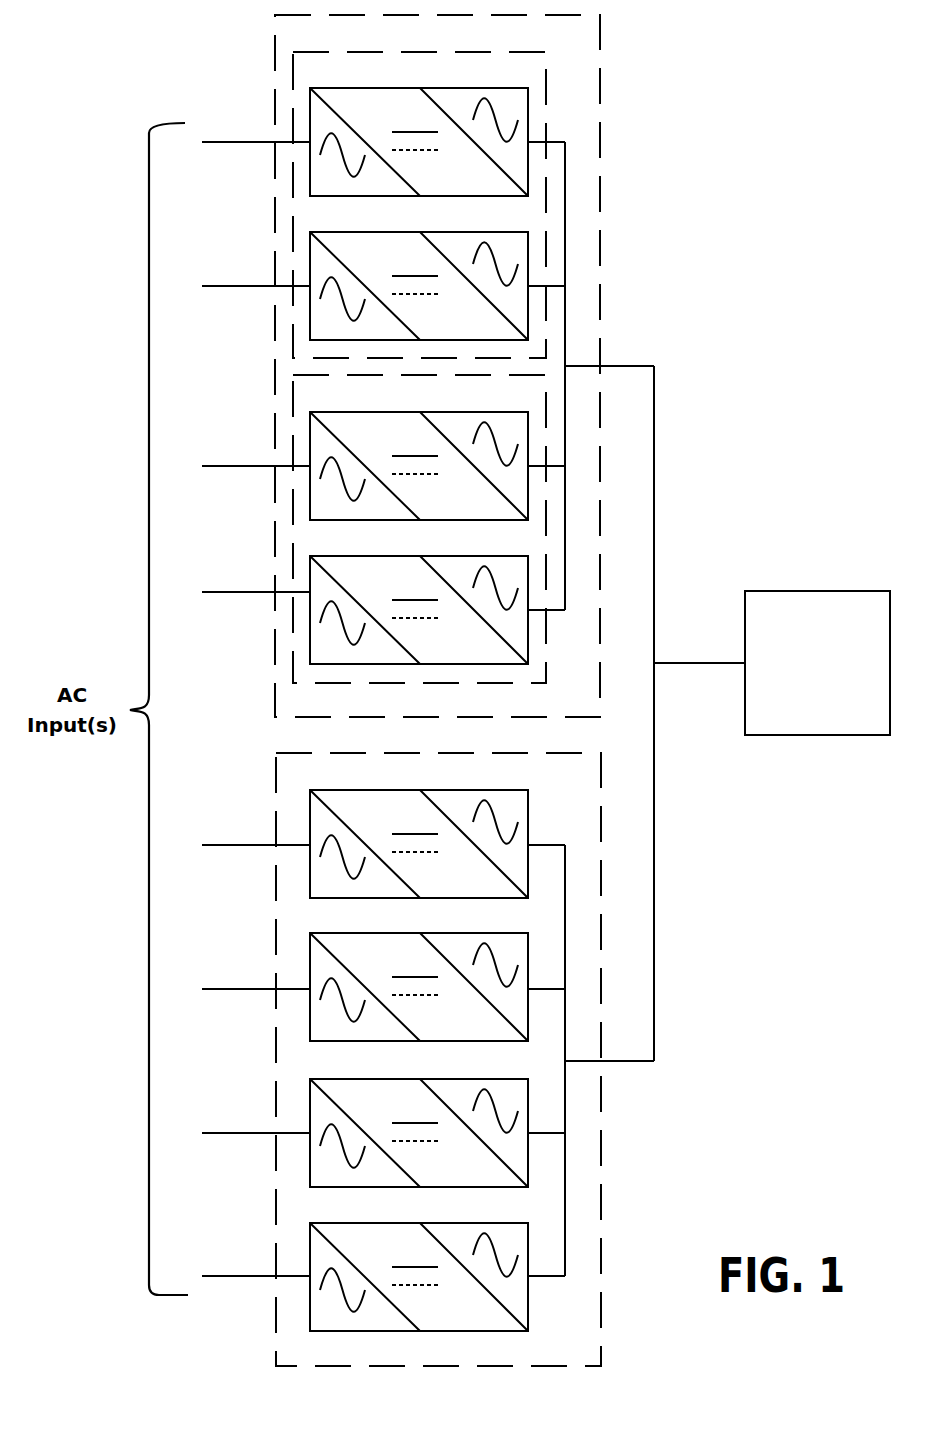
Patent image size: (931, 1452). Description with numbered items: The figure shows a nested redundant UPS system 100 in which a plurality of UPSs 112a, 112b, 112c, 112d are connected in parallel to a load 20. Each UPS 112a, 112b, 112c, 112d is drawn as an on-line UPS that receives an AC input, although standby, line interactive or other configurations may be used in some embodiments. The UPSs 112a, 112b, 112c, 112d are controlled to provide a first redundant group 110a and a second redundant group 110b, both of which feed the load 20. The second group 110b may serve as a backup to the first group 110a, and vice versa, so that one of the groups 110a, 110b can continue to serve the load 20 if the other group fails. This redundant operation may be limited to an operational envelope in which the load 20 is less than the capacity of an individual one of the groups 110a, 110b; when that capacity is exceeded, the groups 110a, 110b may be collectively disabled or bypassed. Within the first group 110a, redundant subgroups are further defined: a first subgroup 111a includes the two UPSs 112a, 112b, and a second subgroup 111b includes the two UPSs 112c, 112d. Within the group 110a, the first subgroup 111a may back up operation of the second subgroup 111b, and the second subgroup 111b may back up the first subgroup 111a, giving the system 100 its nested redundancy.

The UPS system 100 is at (504, 690).
The load 20 is at (820, 590).
The first redundant group 110a is at (418, 366).
The second redundant group 110b is at (275, 1060).
The first redundant subgroup 111a is at (420, 52).
The second redundant subgroup 111b is at (423, 683).
The UPS 112a is at (420, 88).
The UPS 112b is at (420, 232).
The UPS 112c is at (422, 412).
The UPS 112d is at (420, 556).